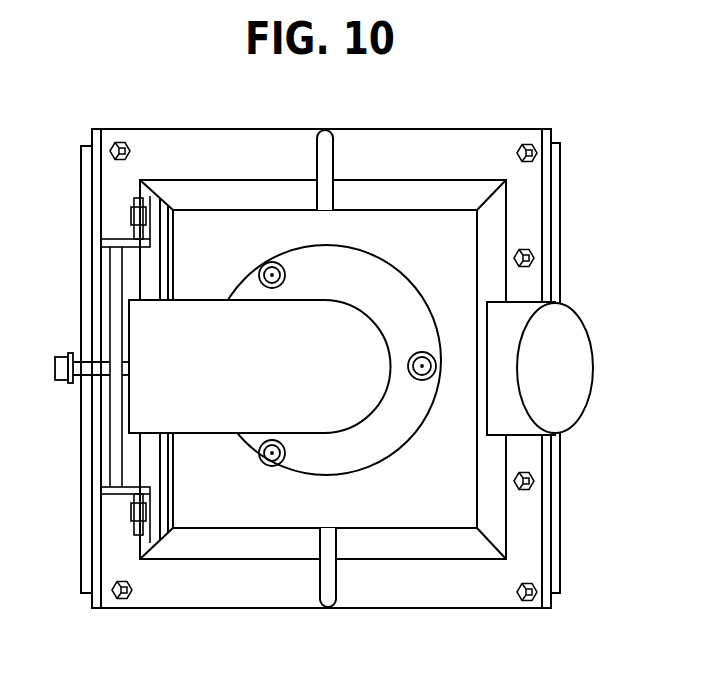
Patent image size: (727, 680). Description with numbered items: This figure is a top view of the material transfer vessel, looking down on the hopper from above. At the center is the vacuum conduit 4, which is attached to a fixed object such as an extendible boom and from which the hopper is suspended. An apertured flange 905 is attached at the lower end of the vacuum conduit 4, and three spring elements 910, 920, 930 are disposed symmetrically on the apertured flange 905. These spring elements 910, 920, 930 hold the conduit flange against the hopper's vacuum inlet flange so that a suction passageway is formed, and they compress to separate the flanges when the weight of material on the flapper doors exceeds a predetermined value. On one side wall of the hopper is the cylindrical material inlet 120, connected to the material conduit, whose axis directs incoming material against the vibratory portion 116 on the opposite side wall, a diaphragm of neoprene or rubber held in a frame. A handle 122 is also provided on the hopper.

The vacuum conduit 4 is at (202, 310).
The apertured flange 905 is at (412, 299).
The spring element 910 is at (286, 455).
The spring element 920 is at (408, 364).
The spring element 930 is at (286, 275).
The vibratory portion 116 is at (82, 415).
The material inlet 120 is at (587, 370).
The handle 122 is at (338, 590).